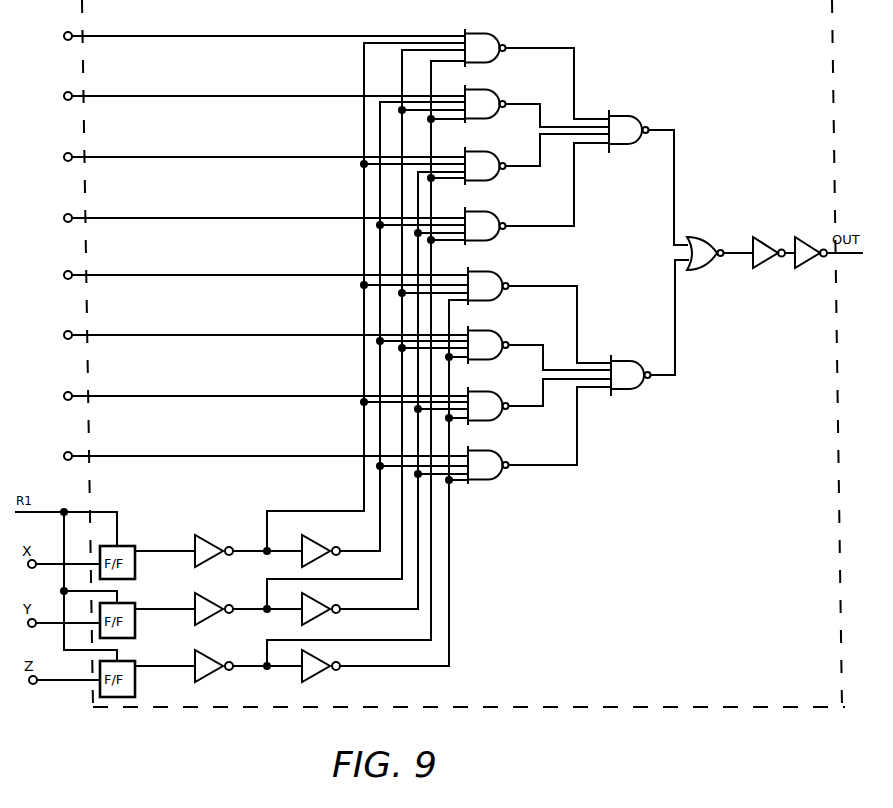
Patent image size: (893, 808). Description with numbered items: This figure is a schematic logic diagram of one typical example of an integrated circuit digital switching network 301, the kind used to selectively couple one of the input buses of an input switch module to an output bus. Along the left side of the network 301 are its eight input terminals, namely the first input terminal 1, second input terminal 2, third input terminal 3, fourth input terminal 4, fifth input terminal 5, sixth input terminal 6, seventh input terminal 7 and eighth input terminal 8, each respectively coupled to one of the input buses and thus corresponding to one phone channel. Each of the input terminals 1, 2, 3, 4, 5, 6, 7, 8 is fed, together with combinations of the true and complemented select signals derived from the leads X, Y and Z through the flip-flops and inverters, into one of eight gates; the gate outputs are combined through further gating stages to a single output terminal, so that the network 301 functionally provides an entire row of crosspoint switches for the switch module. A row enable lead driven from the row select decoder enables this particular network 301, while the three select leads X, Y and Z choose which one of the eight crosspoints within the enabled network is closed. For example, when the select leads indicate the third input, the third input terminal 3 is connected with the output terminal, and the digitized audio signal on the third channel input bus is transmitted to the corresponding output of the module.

The digital switching network 301 is at (727, 690).
The input terminal 1' 1 is at (249, 37).
The input terminal 2' 2 is at (248, 97).
The input terminal 3' 3 is at (248, 158).
The input terminal 4' 4 is at (248, 219).
The input terminal 5' 5 is at (252, 278).
The input terminal 6' 6 is at (252, 338).
The input terminal 7' 7 is at (253, 399).
The input terminal 8' 8 is at (252, 459).